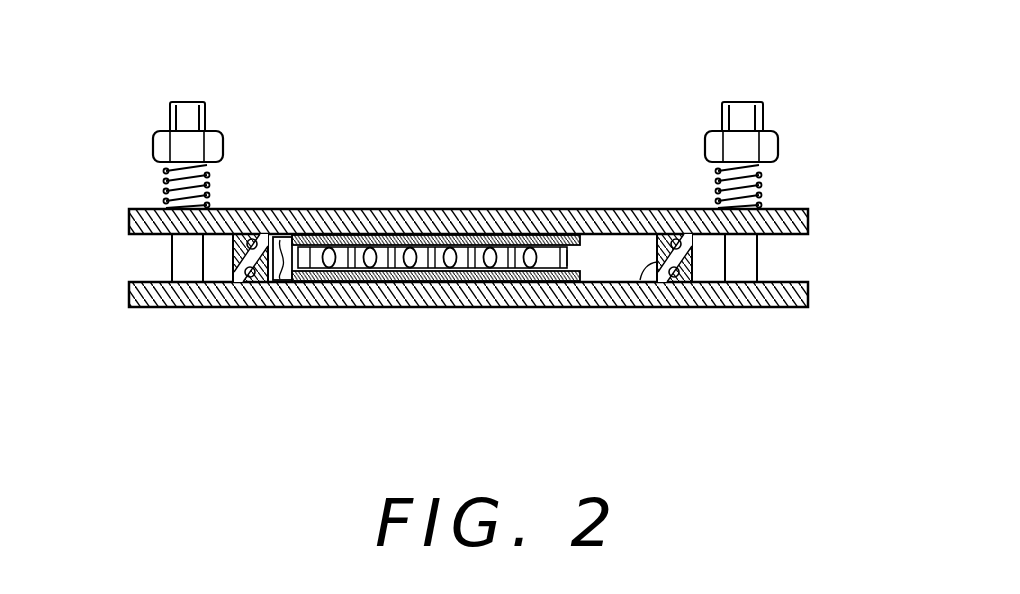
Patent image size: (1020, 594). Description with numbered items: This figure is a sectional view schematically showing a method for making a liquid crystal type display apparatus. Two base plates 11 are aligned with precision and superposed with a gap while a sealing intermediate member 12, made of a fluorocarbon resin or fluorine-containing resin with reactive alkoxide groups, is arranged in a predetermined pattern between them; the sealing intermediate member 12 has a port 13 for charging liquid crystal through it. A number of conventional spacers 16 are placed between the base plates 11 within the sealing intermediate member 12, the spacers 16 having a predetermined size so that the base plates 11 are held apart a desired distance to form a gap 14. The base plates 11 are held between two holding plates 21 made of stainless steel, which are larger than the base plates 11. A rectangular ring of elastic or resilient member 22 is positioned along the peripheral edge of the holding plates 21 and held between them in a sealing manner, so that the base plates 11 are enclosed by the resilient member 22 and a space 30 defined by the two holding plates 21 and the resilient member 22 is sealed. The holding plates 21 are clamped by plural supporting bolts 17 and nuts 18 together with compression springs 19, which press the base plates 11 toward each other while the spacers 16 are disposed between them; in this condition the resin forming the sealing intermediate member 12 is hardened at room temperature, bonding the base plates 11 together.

The base plate 11 is at (528, 234).
The sealing intermediate member 12 is at (273, 238).
The port 13 is at (590, 256).
The gap 14 is at (357, 210).
The spacer 16 is at (530, 283).
The supporting bolt 17 is at (183, 253).
The nut 18 is at (153, 150).
The compression spring 19 is at (163, 188).
The holding plate 21 is at (302, 211).
The resilient member 22 is at (222, 309).
The space 30 is at (597, 262).